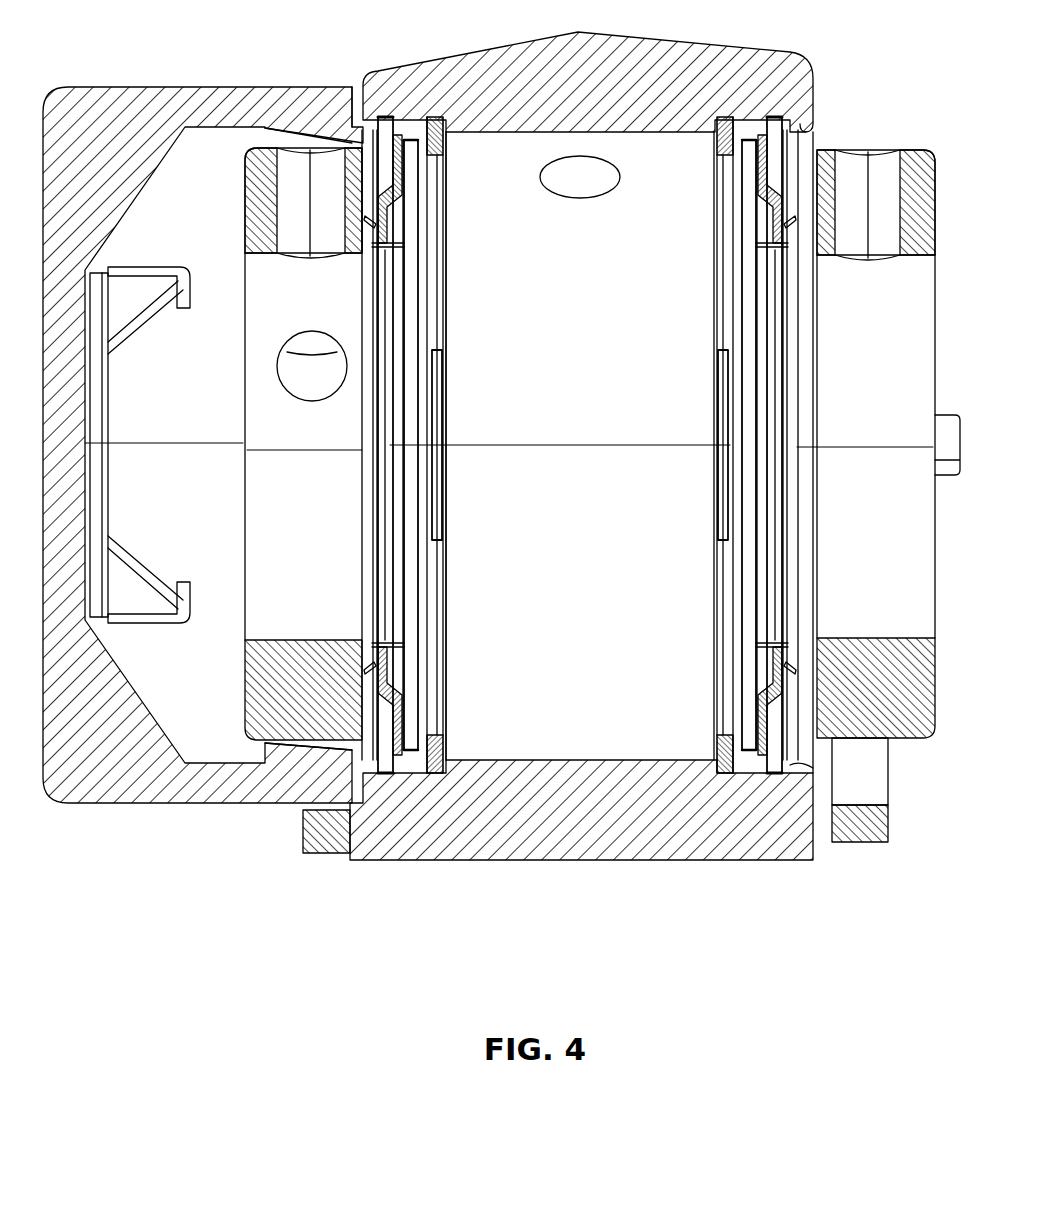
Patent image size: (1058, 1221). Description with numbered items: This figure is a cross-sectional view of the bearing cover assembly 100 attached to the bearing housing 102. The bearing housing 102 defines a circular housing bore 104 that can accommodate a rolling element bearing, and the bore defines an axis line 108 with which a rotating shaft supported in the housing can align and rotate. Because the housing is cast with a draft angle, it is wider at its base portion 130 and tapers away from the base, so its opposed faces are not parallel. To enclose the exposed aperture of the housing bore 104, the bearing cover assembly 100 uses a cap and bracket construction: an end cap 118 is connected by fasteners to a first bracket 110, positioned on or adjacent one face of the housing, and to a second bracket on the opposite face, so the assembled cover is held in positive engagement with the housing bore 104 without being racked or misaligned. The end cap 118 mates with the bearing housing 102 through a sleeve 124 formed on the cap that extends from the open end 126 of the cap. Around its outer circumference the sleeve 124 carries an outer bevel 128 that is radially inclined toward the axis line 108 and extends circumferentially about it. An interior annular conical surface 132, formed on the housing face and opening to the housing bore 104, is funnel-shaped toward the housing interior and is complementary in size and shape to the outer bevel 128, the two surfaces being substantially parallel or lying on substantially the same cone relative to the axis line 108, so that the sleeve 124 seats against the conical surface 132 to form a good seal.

The bearing cover assembly 100 is at (182, 918).
The bearing housing 102 is at (780, 97).
The housing bore 104 is at (558, 413).
The axis line 108 is at (540, 445).
The first bracket 110 is at (317, 854).
The end cap 118 is at (204, 798).
The sleeve 124 is at (357, 755).
The open end 126 is at (355, 549).
The outer bevel 128 is at (357, 762).
The base portion 130 is at (578, 850).
The interior annular conical surface 132 is at (352, 127).